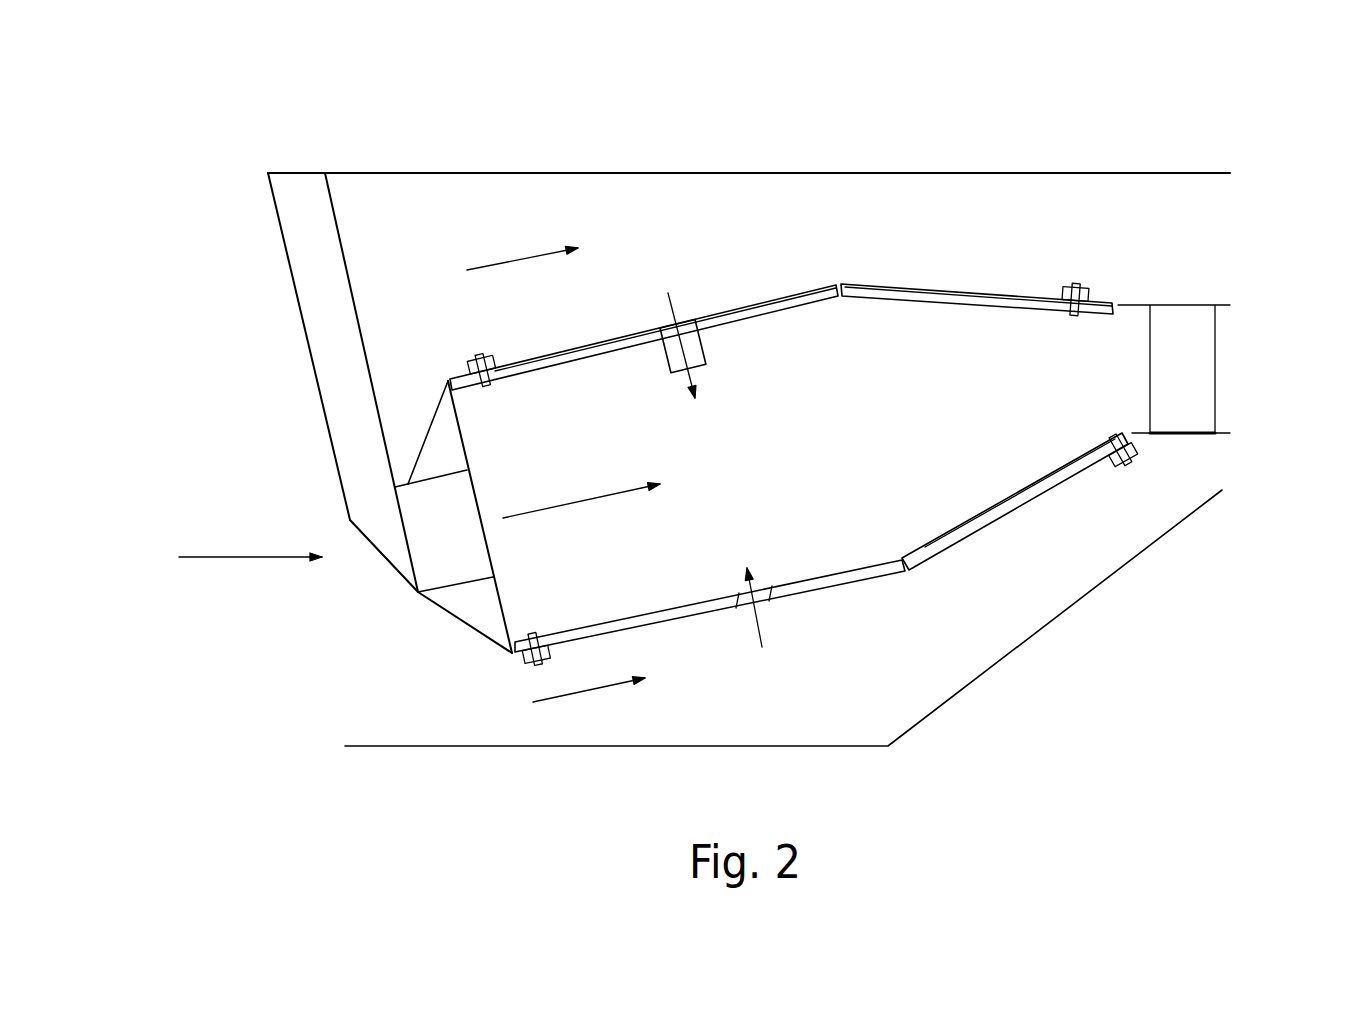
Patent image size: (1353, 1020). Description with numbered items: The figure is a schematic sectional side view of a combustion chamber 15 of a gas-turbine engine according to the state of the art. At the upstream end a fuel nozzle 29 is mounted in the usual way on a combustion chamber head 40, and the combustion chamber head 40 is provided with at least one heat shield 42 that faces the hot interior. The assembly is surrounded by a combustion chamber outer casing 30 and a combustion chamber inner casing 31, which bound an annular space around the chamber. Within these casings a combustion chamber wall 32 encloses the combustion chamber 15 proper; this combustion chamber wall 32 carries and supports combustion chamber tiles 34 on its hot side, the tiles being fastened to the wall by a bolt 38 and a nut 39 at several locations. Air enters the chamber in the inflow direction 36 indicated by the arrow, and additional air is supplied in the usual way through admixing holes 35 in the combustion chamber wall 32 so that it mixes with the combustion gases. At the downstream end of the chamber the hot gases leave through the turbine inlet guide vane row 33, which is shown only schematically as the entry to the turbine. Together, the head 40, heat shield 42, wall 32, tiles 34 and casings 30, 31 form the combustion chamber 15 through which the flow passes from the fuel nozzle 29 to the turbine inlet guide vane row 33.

The combustion chamber 15 is at (893, 463).
The fuel nozzle 29 is at (432, 592).
The combustion chamber outer casing 30 is at (863, 173).
The combustion chamber inner casing 31 is at (707, 747).
The combustion chamber wall 32 is at (457, 380).
The turbine inlet guide vane row 33 is at (1200, 405).
The combustion chamber tile 34 is at (785, 293).
The admixing hole 35 is at (662, 303).
The inflow direction 36 is at (255, 558).
The bolt 38 is at (481, 358).
The nut 39 is at (1063, 285).
The combustion chamber head 40 is at (435, 448).
The heat shield 42 is at (442, 545).